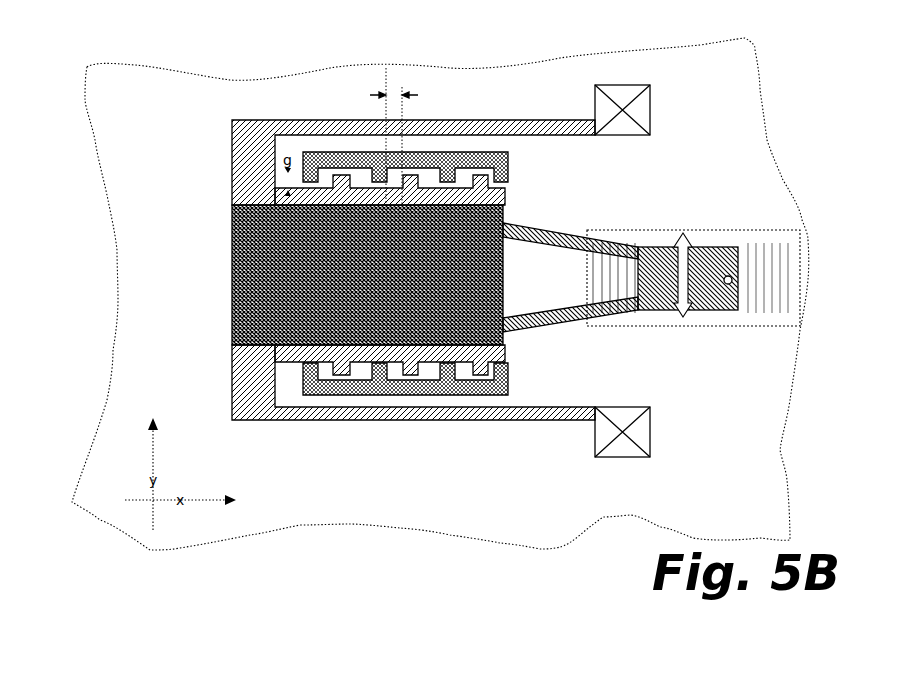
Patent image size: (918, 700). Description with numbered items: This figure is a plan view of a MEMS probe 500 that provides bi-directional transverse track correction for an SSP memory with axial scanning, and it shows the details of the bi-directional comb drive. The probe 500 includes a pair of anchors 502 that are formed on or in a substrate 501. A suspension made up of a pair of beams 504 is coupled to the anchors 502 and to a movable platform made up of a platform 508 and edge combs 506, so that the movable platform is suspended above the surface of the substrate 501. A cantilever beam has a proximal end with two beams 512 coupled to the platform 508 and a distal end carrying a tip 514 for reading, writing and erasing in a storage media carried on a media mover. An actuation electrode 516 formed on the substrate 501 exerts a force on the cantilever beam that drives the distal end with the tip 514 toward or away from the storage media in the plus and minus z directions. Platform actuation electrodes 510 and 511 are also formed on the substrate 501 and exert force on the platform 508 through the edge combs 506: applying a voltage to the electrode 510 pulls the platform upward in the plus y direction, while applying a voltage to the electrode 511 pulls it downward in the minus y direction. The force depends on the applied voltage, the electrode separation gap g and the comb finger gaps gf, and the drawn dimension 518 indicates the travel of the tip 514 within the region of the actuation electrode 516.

The MEMS probe 500 is at (502, 50).
The substrate 501 is at (386, 68).
The anchors 502 is at (652, 116).
The beams 504 is at (355, 125).
The edge combs 506 is at (505, 196).
The platform 508 is at (255, 292).
The platform actuation electrode 510 is at (508, 161).
The platform actuation electrode 511 is at (508, 383).
The beams 512 is at (630, 253).
The tip 514 is at (728, 312).
The actuation electrode 516 is at (770, 327).
The travel distance indicator 518 is at (683, 275).